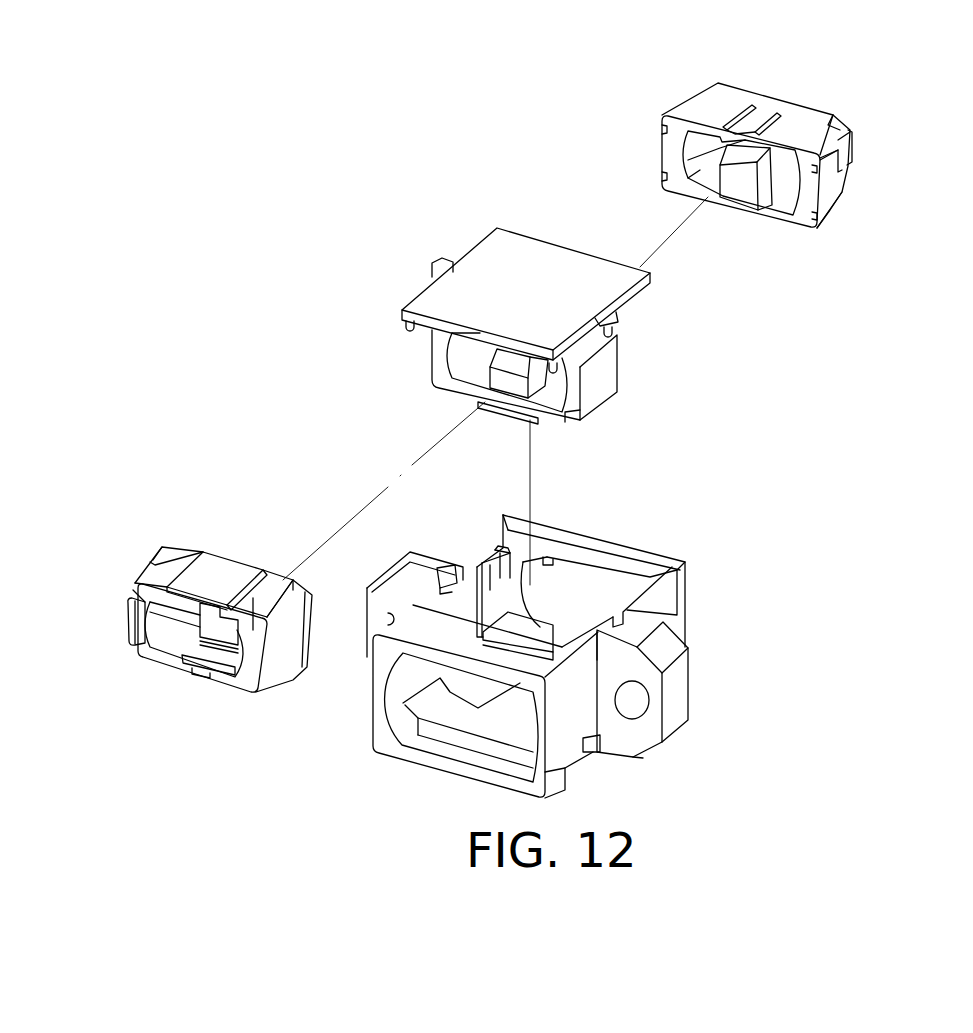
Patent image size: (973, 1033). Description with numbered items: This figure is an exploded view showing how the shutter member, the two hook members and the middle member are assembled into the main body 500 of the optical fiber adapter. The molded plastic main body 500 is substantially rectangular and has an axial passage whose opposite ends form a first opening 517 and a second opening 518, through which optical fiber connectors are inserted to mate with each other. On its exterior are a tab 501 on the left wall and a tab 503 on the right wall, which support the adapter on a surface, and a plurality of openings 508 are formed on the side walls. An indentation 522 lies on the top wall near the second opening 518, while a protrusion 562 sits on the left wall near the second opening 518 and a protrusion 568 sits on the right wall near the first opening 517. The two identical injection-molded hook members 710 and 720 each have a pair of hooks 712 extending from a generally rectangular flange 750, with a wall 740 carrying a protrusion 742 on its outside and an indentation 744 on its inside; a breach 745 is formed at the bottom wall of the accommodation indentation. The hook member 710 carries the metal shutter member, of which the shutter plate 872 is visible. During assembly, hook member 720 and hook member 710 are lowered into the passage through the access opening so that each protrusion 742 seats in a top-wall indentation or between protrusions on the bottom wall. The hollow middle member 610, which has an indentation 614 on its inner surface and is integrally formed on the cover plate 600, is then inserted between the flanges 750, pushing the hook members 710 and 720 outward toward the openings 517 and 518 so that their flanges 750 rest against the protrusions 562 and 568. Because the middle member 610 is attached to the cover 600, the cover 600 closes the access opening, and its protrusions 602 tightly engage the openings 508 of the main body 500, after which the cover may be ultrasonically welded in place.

The main body 500 is at (723, 713).
The tab 501 is at (418, 568).
The tab 503 is at (643, 630).
The openings 508 is at (498, 547).
The first opening 517 is at (465, 710).
The second opening 518 is at (640, 573).
The indentation 522 is at (592, 602).
The protrusion 562 is at (513, 628).
The protrusion 568 is at (490, 560).
The cover plate 600 is at (525, 258).
The protrusions 602 is at (402, 314).
The middle member 610 is at (600, 385).
The indentation 614 is at (515, 393).
The hook member 710 is at (141, 672).
The hooks 712 is at (858, 132).
The hook member 720 is at (838, 229).
The wall 740 is at (164, 578).
The protrusion 742 is at (227, 567).
The indentation 744 is at (750, 205).
The breach 745 is at (777, 107).
The flange 750 is at (807, 204).
The shutter plate 872 is at (217, 653).